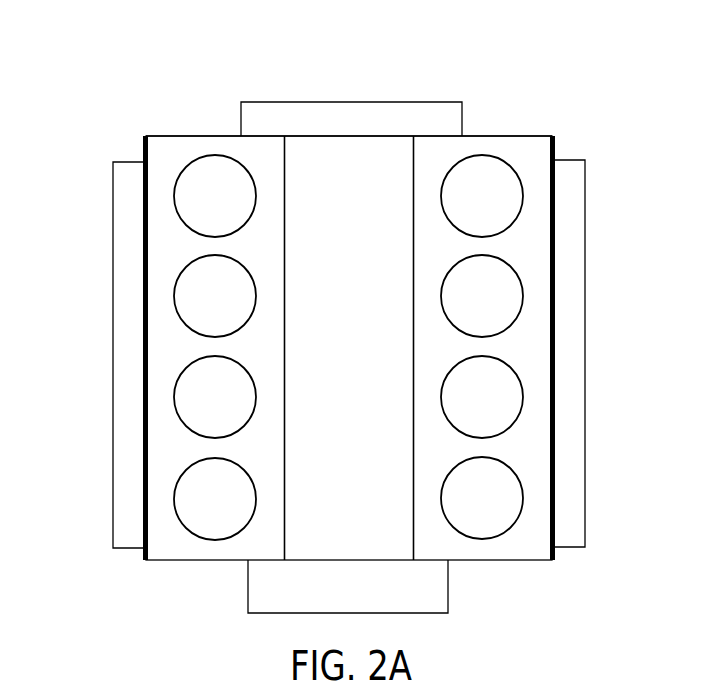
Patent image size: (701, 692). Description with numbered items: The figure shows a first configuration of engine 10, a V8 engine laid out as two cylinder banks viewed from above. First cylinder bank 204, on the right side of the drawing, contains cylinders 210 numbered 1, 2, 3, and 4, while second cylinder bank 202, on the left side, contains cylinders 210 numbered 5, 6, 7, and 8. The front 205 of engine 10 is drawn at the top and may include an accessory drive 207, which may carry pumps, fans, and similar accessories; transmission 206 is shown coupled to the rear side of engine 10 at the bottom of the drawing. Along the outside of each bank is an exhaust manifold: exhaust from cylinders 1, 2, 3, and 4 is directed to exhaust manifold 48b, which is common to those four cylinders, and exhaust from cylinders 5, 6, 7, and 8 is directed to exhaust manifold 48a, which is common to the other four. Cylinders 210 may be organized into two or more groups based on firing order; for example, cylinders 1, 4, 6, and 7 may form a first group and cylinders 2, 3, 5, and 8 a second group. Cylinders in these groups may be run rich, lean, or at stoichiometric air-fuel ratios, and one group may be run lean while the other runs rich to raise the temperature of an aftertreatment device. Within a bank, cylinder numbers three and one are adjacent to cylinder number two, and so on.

The engine 10 is at (370, 56).
The second cylinder bank 202 is at (204, 48).
The first cylinder bank 204 is at (511, 92).
The front of engine 205 is at (331, 84).
The transmission 206 is at (348, 586).
The accessory drive 207 is at (351, 119).
The cylinders 210 is at (348, 347).
The exhaust manifold 48a is at (130, 318).
The exhaust manifold 48b is at (565, 294).
The cylinder number one 1 is at (482, 196).
The cylinder number two 2 is at (482, 296).
The cylinder number three 3 is at (482, 397).
The cylinder number four 4 is at (482, 498).
The cylinder number five 5 is at (215, 196).
The cylinder number six 6 is at (215, 296).
The cylinder number seven 7 is at (215, 397).
The cylinder number eight 8 is at (215, 499).